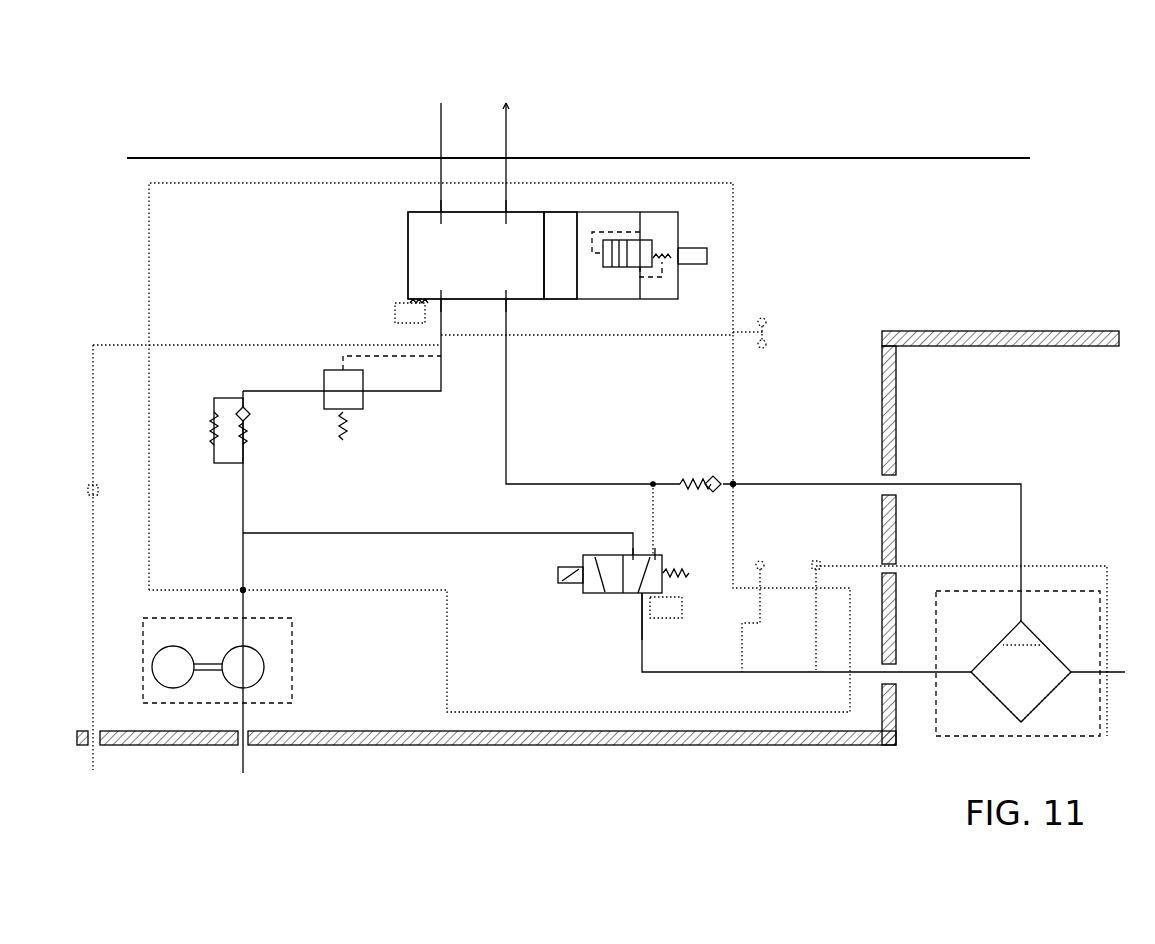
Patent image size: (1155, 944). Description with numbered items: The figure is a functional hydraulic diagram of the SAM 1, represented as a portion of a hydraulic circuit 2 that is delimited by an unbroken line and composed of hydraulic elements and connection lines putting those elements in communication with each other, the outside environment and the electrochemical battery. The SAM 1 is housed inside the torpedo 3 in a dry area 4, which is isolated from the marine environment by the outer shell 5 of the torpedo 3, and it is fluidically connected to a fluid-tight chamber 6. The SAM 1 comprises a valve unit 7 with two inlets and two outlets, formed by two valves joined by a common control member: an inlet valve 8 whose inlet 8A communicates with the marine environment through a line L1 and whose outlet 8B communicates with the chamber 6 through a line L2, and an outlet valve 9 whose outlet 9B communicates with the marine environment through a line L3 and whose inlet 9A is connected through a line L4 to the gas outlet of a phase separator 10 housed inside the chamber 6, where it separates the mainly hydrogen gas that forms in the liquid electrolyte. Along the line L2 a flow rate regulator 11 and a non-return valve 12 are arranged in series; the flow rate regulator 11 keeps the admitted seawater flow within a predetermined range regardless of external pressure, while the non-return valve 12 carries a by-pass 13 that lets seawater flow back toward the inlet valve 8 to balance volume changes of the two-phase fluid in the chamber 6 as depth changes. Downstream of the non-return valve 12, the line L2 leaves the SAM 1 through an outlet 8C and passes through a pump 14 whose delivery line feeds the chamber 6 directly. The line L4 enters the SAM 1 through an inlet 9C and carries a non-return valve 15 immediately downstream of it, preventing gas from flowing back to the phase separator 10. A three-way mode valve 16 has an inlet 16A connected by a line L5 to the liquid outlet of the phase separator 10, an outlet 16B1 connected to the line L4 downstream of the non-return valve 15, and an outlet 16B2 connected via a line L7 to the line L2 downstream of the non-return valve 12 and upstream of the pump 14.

The SAM 1 is at (740, 272).
The hydraulic circuit 2 is at (752, 440).
The torpedo 3 is at (1043, 138).
The dry area 4 is at (932, 193).
The outer shell 5 is at (902, 157).
The fluid-tight chamber 6 is at (418, 768).
The valve unit 7 is at (578, 200).
The inlet valve 8 is at (425, 211).
The inlet 8A is at (441, 214).
The outlet 8B is at (441, 300).
The outlet 8C is at (243, 588).
The outlet valve 9 is at (496, 205).
The inlet 9A is at (507, 300).
The outlet 9B is at (507, 213).
The inlet 9C is at (736, 484).
The phase separator 10 is at (1040, 640).
The flow rate regulator 11 is at (323, 383).
The non-return valve 12 is at (259, 437).
The by-pass 13 is at (205, 435).
The pump 14 is at (270, 665).
The non-return valve 15 is at (693, 500).
The mode valve 16 is at (602, 602).
The inlet 16A is at (646, 560).
The outlet 16B1 is at (656, 552).
The outlet 16B2 is at (632, 553).
The line L1 is at (441, 174).
The line L2 is at (403, 391).
The line L3 is at (507, 172).
The line L4 is at (507, 447).
The line L5 is at (662, 673).
The line L7 is at (373, 532).